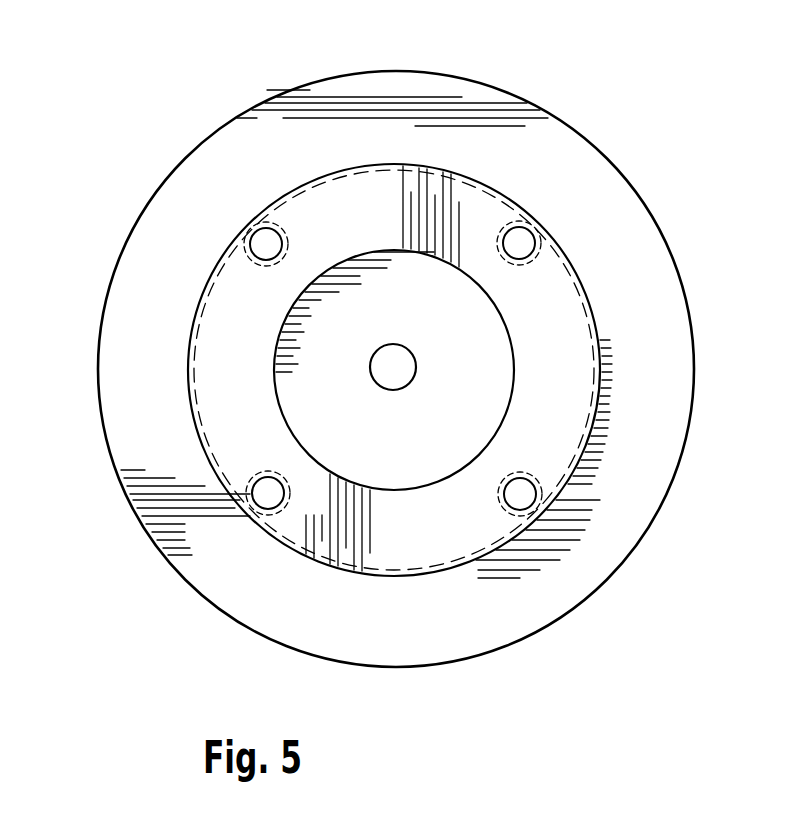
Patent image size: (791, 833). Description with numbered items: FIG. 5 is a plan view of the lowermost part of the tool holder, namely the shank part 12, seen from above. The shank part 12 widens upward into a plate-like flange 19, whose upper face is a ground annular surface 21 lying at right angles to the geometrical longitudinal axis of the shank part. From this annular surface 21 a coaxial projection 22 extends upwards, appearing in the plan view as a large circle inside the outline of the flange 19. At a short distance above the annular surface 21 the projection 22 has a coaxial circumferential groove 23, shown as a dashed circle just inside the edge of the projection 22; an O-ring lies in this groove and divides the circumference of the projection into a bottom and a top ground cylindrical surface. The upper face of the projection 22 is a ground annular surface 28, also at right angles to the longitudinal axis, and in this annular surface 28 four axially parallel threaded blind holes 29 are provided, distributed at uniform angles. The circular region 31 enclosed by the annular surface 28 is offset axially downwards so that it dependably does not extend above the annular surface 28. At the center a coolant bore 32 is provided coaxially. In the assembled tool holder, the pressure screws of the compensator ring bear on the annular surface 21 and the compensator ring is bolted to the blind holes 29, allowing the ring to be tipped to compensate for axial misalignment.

The shank part 12 is at (613, 113).
The plate-like flange 19 is at (147, 203).
The annular surface 21 is at (138, 288).
The coaxial projection 22 is at (349, 165).
The circumferential groove 23 is at (193, 420).
The annular surface 28 is at (203, 378).
The blind holes 29 is at (256, 236).
The circular region 31 is at (493, 340).
The coolant bore 32 is at (398, 370).